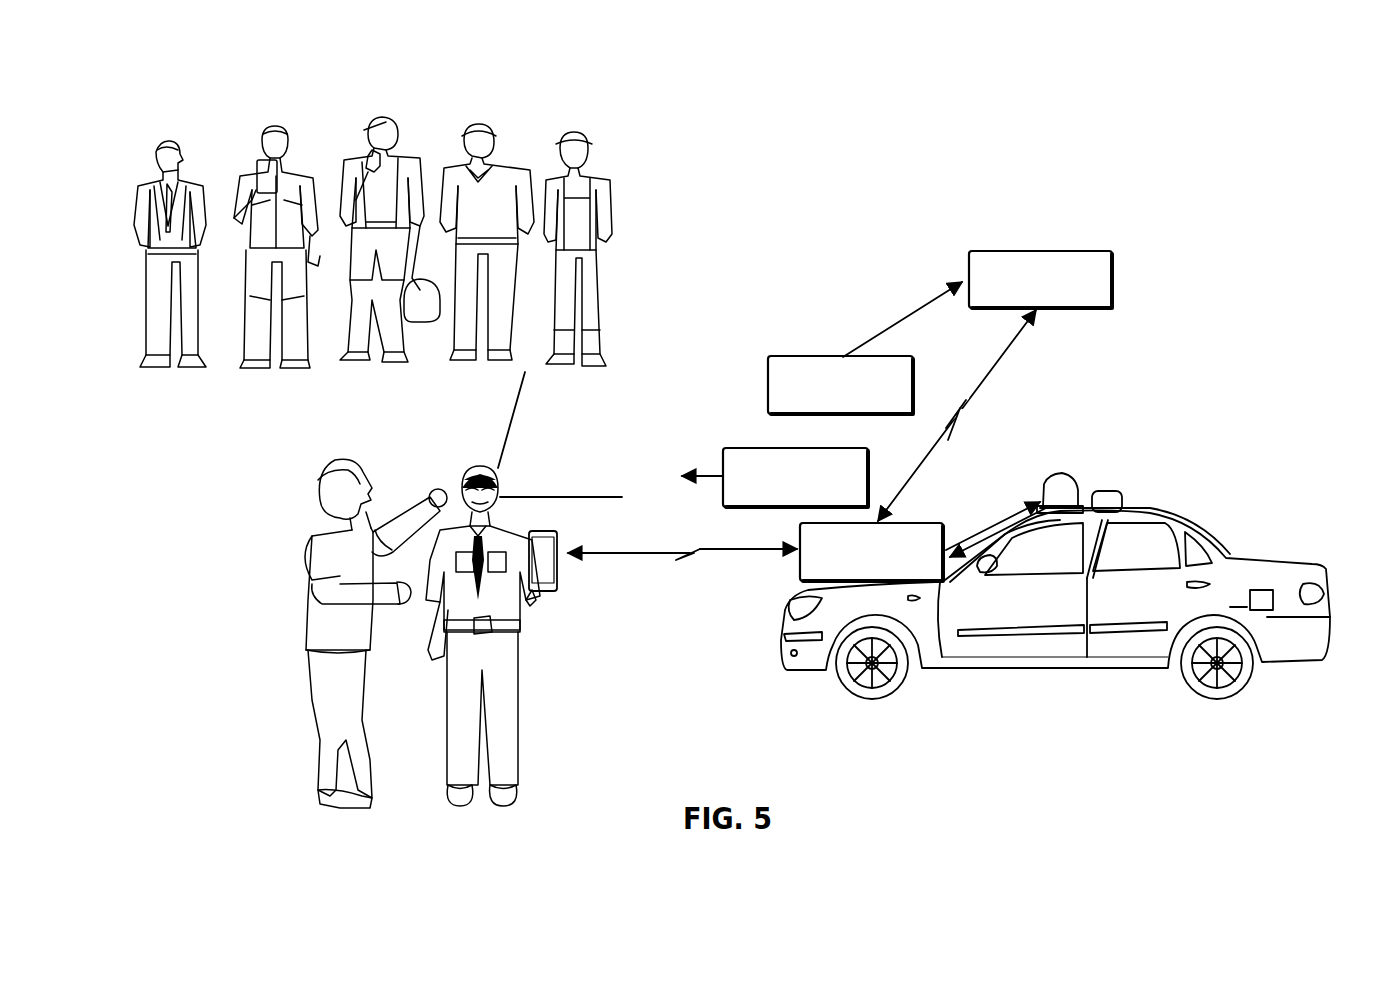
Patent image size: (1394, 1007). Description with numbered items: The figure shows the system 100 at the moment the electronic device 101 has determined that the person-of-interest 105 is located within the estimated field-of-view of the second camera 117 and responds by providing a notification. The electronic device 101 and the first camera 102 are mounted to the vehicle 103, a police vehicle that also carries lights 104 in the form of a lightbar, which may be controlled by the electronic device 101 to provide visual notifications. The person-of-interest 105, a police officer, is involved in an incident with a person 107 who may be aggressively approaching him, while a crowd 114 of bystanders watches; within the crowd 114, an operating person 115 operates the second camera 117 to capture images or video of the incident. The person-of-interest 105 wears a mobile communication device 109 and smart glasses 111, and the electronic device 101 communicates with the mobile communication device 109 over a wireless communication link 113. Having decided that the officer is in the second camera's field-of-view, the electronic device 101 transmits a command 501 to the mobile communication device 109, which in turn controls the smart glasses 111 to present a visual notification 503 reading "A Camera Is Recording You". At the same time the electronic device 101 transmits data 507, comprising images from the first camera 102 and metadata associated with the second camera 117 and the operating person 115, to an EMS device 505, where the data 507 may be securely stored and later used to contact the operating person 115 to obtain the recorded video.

The system 100 is at (1168, 160).
The electronic device 101 is at (800, 536).
The first camera 102 is at (1054, 476).
The vehicle 103 is at (1040, 670).
The lights 104 is at (1108, 490).
The person-of-interest 105 is at (519, 700).
The person 107 is at (310, 612).
The mobile communication device 109 is at (558, 576).
The smart glasses 111 is at (464, 478).
The wireless communication link 113 is at (690, 556).
The crowd 114 is at (592, 102).
The operating person 115 is at (274, 124).
The second camera 117 is at (256, 162).
The command 501 is at (722, 498).
The visual notification 503 is at (508, 446).
The EMS device 505 is at (968, 266).
The data 507 is at (768, 388).